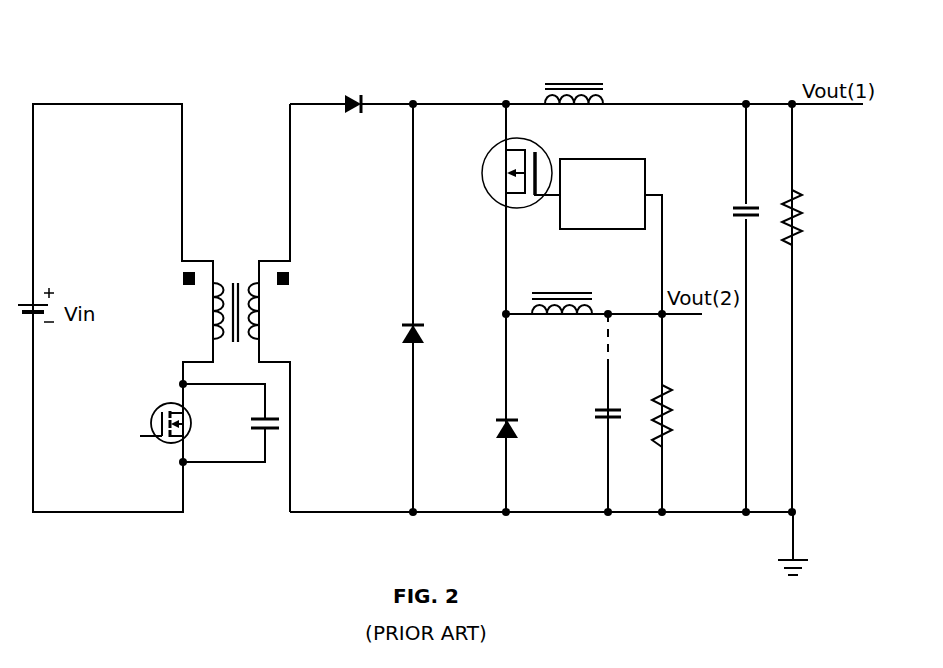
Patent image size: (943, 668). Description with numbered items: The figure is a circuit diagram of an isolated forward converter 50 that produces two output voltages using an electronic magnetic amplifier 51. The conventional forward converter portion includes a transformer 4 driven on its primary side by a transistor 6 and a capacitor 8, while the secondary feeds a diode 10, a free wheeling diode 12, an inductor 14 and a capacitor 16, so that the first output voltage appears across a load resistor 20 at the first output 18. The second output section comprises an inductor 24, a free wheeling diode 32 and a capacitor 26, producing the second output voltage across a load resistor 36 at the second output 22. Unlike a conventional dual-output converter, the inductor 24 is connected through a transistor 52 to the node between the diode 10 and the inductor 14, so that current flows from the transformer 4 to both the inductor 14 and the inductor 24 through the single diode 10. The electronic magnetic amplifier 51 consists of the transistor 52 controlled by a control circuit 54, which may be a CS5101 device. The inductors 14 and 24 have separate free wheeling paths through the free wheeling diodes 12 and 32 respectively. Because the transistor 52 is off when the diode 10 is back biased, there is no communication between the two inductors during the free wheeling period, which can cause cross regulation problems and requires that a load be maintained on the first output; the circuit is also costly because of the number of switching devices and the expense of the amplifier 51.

The transformer 4 is at (238, 283).
The transistor 6 is at (153, 414).
The capacitor 8 is at (262, 418).
The diode 10 is at (349, 96).
The free wheeling diode 12 is at (402, 336).
The inductor 14 is at (605, 96).
The capacitor 16 is at (736, 207).
The first output terminal 18 is at (828, 108).
The load resistor 20 is at (800, 230).
The second output terminal 22 is at (693, 318).
The inductor 24 is at (558, 316).
The capacitor 26 is at (599, 407).
The free wheeling diode 32 is at (497, 431).
The load resistor 36 is at (670, 425).
The isolated forward converter 50 is at (735, 71).
The electronic magnetic amplifier 51 is at (554, 152).
The transistor 52 is at (506, 187).
The control circuit 54 is at (603, 231).